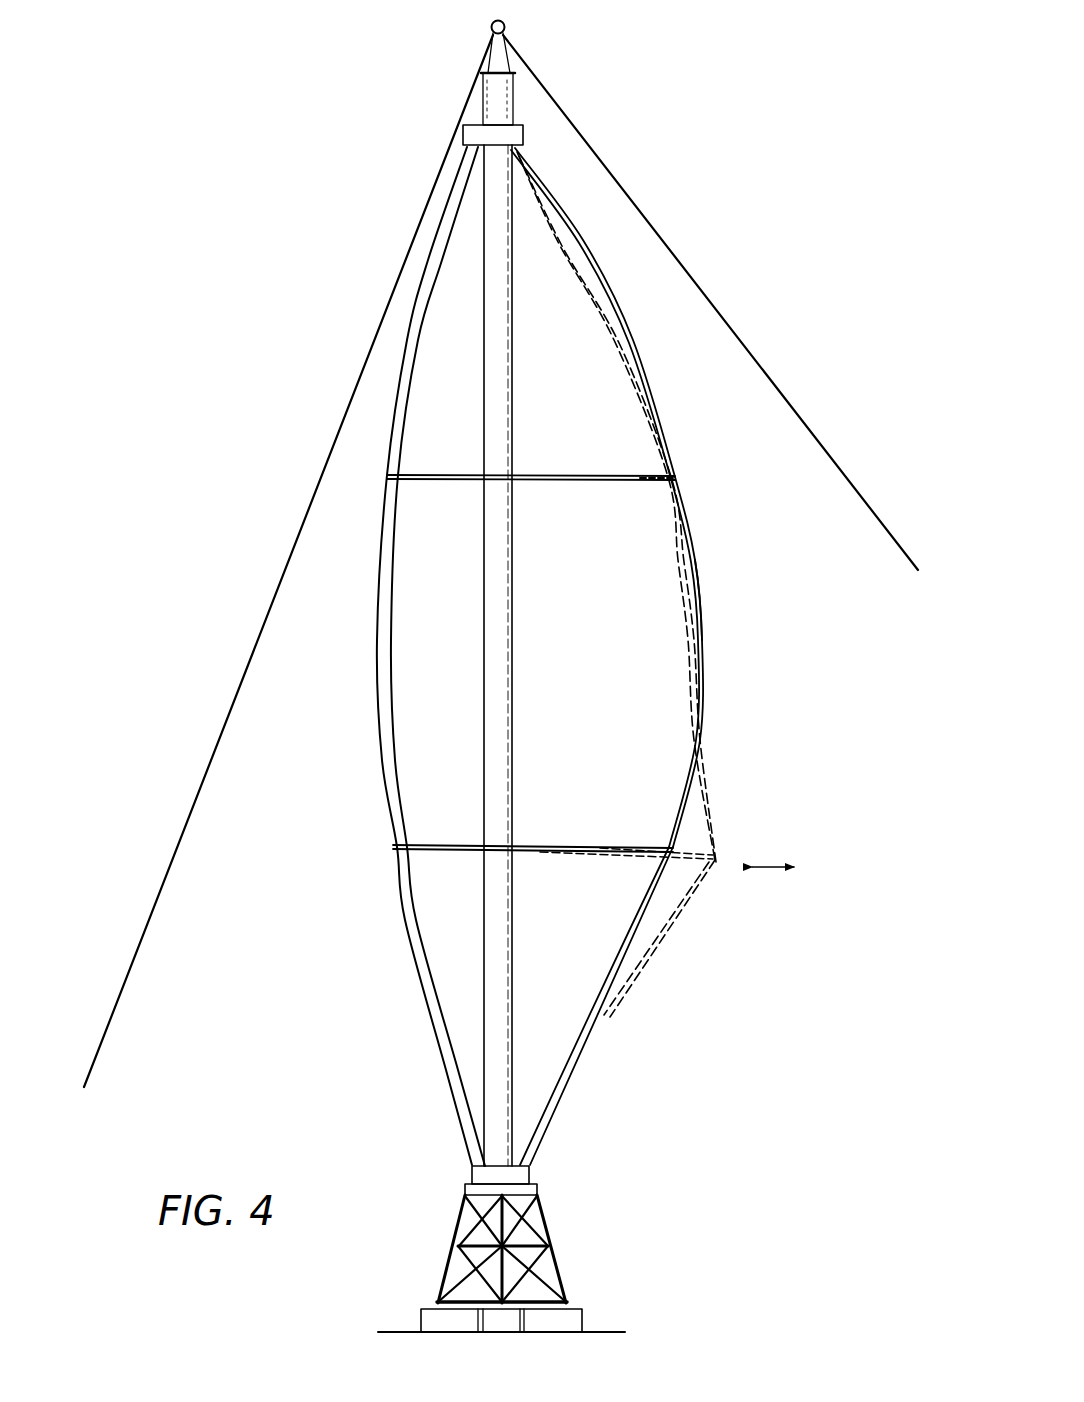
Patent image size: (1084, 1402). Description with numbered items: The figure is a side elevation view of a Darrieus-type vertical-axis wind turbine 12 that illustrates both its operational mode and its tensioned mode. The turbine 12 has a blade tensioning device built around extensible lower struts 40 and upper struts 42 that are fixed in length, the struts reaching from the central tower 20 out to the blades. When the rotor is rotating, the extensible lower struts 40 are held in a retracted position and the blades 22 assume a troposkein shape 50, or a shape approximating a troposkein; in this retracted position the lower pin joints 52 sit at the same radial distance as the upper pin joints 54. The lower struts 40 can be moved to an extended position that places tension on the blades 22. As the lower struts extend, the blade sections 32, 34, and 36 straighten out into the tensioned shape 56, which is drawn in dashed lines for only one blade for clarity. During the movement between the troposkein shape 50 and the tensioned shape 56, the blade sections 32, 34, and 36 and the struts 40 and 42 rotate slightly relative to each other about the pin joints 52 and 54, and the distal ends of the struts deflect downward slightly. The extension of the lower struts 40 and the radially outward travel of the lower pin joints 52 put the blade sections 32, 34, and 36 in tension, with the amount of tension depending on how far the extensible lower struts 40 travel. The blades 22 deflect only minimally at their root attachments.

The vertical-axis wind turbine 12 is at (787, 615).
The mast 20 is at (501, 682).
The blades 22 is at (705, 543).
The blade section 32 is at (588, 1063).
The blade section 34 is at (703, 647).
The blade section 36 is at (582, 246).
The extensible lower struts 40 is at (533, 821).
The upper struts 42 is at (531, 454).
The troposkein shape 50 is at (702, 593).
The lower pin joints 52 is at (655, 888).
The upper pin joints 54 is at (702, 456).
The tensioned shape 56 is at (592, 320).